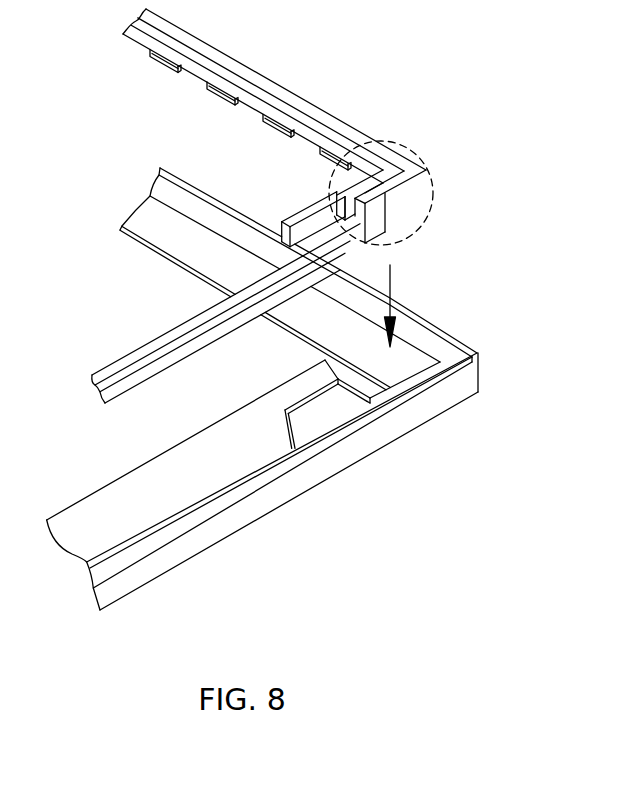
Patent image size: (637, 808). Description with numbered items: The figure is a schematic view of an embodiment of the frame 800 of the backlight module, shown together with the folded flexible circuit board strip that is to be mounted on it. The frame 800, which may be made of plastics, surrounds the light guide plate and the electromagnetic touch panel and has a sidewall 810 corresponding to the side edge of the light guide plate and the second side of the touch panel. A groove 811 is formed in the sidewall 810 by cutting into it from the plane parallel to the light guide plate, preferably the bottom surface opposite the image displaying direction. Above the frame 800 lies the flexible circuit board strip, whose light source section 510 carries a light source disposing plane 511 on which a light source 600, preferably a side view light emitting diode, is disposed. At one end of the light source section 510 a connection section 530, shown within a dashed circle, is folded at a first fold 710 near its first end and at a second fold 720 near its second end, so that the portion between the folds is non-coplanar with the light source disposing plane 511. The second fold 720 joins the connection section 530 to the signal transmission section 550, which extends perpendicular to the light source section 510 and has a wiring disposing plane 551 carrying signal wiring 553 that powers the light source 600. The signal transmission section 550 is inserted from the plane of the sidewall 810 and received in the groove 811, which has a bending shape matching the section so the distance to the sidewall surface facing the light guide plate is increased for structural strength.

The light source section 510 is at (317, 112).
The light source disposing plane 511 is at (197, 75).
The light source 600 is at (162, 59).
The connection section 530 is at (405, 141).
The first fold 710 is at (386, 208).
The second fold 720 is at (326, 201).
The frame 800 is at (427, 408).
The sidewall 810 is at (308, 443).
The groove 811 is at (314, 398).
The signal transmission section 550 is at (182, 331).
The wiring disposing plane 551 is at (241, 318).
The signal wiring 553 is at (126, 380).